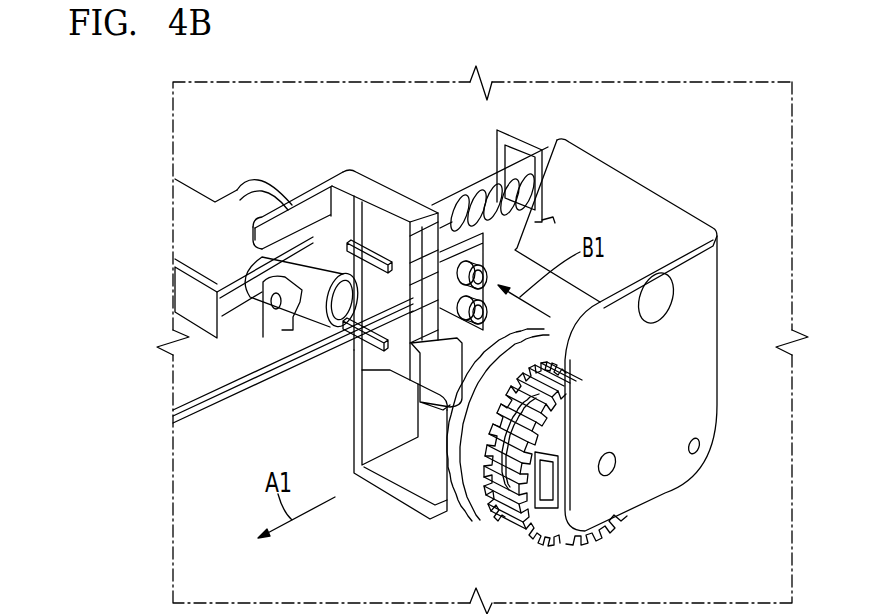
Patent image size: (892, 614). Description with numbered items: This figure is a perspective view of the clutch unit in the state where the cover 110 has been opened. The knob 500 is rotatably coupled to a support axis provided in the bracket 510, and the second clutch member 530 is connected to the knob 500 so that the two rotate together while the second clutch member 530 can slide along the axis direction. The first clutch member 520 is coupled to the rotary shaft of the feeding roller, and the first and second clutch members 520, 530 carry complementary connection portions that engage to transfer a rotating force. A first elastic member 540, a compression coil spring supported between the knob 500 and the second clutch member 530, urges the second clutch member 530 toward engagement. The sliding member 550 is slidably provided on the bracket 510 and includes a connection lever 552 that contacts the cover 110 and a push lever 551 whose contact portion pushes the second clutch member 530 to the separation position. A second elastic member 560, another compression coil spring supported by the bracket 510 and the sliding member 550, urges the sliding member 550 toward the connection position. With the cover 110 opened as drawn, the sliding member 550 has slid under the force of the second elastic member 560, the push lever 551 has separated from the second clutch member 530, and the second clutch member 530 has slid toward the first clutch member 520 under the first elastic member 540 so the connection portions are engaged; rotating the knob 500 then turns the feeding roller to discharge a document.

The cover 110 is at (206, 425).
The knob 500 is at (577, 540).
The bracket 510 is at (667, 492).
The first clutch member 520 is at (455, 340).
The second clutch member 530 is at (484, 492).
The first elastic member 540 is at (558, 358).
The sliding member 550 is at (403, 176).
The push lever 551 is at (415, 503).
The connection lever 552 is at (306, 203).
The second elastic member 560 is at (475, 192).